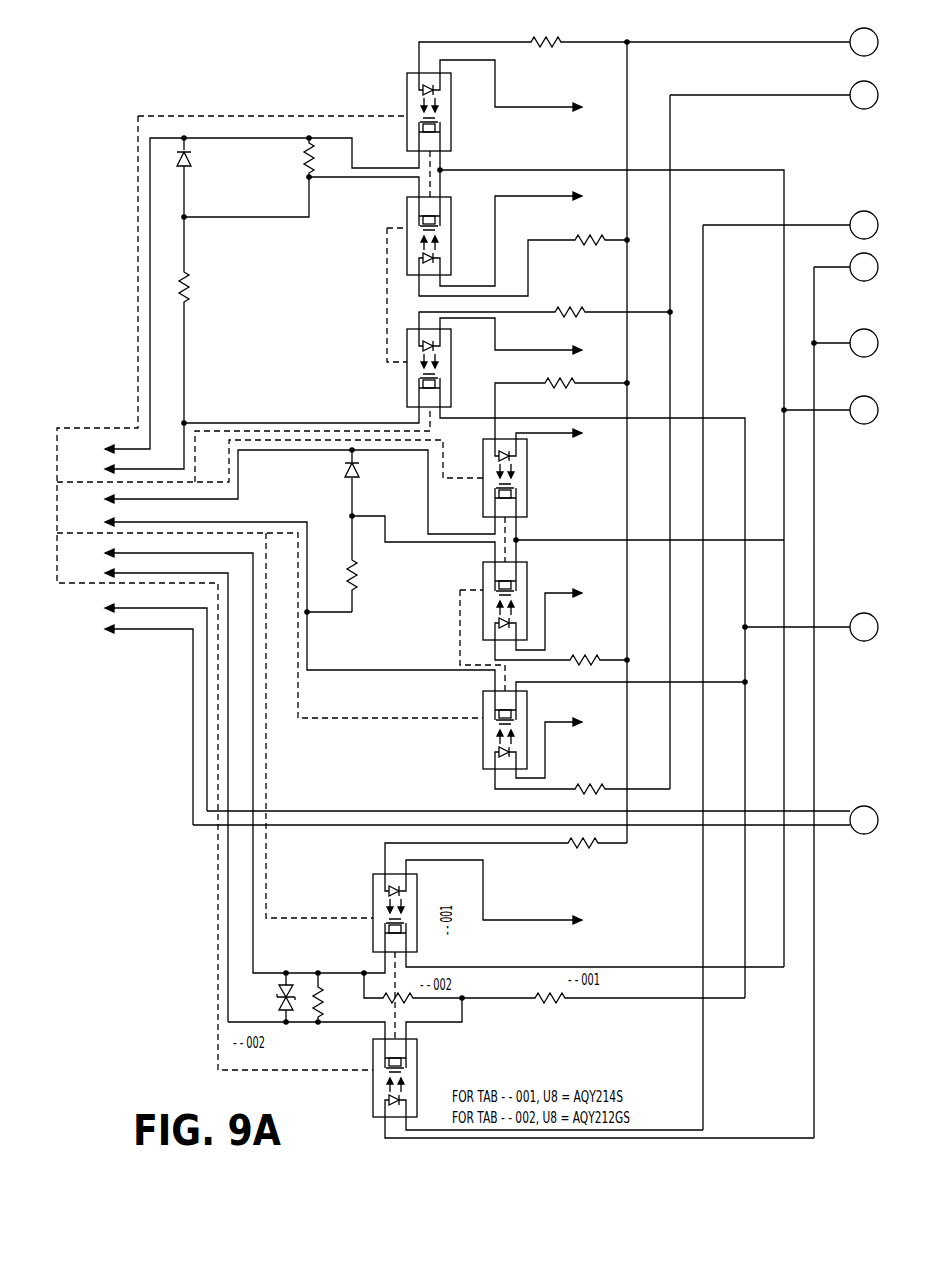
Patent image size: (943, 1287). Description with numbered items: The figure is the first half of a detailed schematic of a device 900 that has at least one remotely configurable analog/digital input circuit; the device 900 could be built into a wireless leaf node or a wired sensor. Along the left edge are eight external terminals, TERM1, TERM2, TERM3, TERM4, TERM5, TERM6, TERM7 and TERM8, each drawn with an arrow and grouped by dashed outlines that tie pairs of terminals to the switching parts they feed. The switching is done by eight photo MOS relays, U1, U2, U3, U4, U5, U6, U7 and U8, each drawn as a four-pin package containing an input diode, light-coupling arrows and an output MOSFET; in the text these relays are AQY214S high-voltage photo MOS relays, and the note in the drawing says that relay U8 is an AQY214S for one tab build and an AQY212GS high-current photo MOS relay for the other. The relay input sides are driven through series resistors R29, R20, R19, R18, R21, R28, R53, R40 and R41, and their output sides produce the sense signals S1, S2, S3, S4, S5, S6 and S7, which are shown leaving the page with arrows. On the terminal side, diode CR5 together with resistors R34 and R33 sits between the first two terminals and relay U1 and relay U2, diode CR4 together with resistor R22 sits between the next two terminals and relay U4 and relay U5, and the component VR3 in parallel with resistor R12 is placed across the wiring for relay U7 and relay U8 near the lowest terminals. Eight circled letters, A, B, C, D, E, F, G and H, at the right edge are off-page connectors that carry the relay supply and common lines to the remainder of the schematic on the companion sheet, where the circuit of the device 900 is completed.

The device 900 is at (240, 77).
The solid state relay U1 is at (421, 113).
The solid state relay U2 is at (421, 237).
The solid state relay U3 is at (421, 369).
The solid state relay U4 is at (497, 479).
The solid state relay U5 is at (497, 602).
The solid state relay U6 is at (497, 731).
The solid state relay U7 is at (387, 914).
The solid state relay U8 is at (387, 1079).
The resistor R29 is at (546, 33).
The resistor R20 is at (590, 230).
The resistor R19 is at (570, 301).
The resistor R18 is at (560, 373).
The resistor R21 is at (585, 650).
The resistor R28 is at (590, 779).
The resistor R53 is at (583, 854).
The resistor R40 is at (398, 990).
The resistor R41 is at (550, 988).
The resistor R34 is at (298, 158).
The resistor R33 is at (172, 287).
The resistor R22 is at (340, 575).
The resistor R12 is at (332, 1002).
The diode CR5 is at (200, 162).
The diode CR4 is at (367, 473).
The transient voltage suppressor VR3 is at (271, 997).
The sense output S1 is at (590, 108).
The sense output S2 is at (590, 197).
The sense output S3 is at (590, 351).
The sense output S4 is at (590, 434).
The sense output S5 is at (590, 594).
The sense output S6 is at (590, 723).
The sense output S7 is at (590, 921).
The terminal TERM1 is at (93, 446).
The terminal TERM2 is at (93, 466).
The terminal TERM3 is at (93, 550).
The terminal TERM4 is at (93, 496).
The terminal TERM5 is at (93, 519).
The terminal TERM6 is at (93, 570).
The terminal TERM7 is at (93, 605).
The terminal TERM8 is at (93, 626).
The off-page connector A is at (864, 42).
The off-page connector B is at (864, 95).
The off-page connector C is at (864, 225).
The off-page connector D is at (864, 267).
The off-page connector E is at (864, 343).
The off-page connector F is at (864, 410).
The off-page connector G is at (864, 627).
The off-page connector H is at (864, 820).